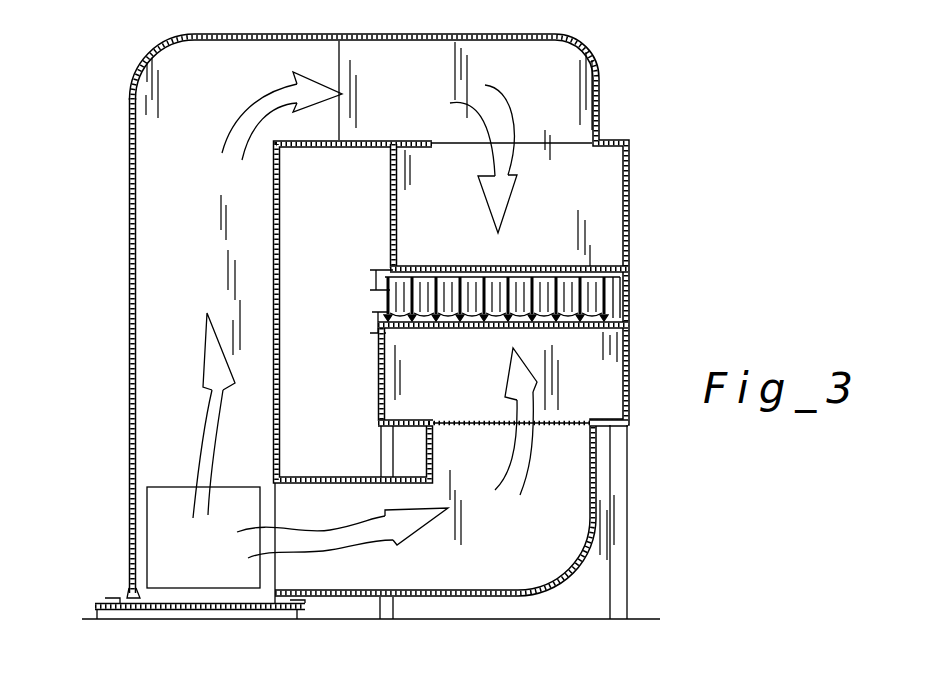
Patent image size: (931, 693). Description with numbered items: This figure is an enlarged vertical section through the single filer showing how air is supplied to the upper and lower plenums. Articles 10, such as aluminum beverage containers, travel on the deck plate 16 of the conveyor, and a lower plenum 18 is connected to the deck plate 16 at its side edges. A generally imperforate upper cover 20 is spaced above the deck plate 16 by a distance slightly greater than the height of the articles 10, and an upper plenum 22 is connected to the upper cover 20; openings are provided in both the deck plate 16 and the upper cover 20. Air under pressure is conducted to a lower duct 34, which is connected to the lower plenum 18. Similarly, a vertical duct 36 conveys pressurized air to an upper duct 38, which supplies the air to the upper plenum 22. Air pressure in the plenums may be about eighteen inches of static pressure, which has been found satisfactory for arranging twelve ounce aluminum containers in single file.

The articles 10 is at (497, 290).
The deck plate 16 is at (625, 320).
The lower plenum 18 is at (625, 367).
The upper cover 20 is at (622, 260).
The upper plenum 22 is at (575, 187).
The lower duct 34 is at (582, 528).
The vertical duct 36 is at (155, 328).
The upper duct 38 is at (567, 63).